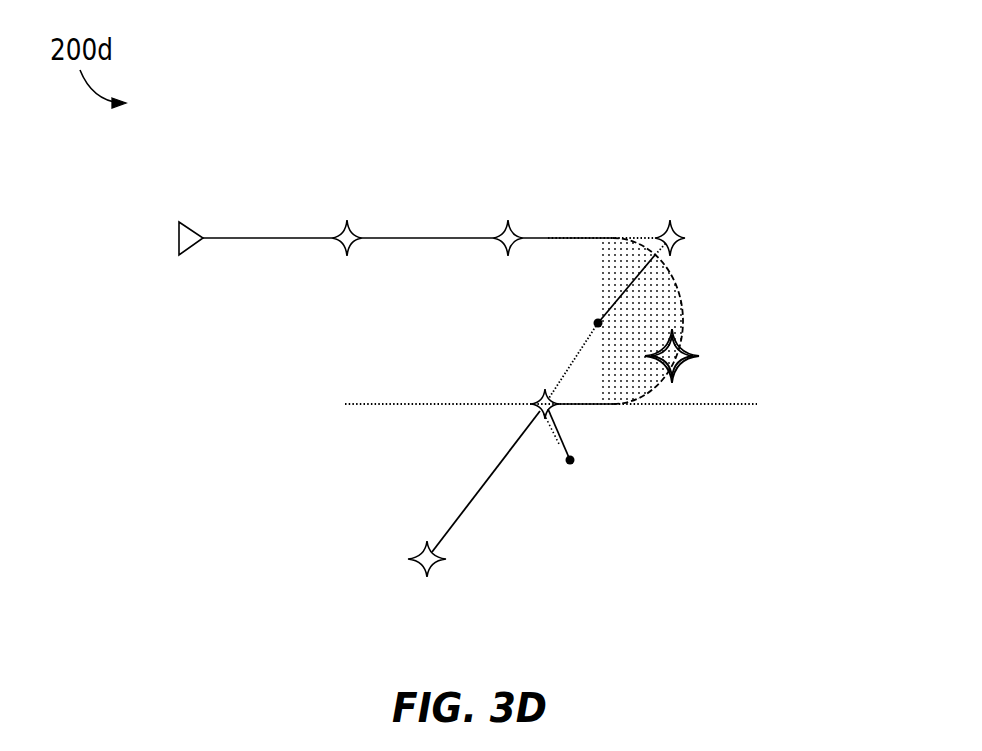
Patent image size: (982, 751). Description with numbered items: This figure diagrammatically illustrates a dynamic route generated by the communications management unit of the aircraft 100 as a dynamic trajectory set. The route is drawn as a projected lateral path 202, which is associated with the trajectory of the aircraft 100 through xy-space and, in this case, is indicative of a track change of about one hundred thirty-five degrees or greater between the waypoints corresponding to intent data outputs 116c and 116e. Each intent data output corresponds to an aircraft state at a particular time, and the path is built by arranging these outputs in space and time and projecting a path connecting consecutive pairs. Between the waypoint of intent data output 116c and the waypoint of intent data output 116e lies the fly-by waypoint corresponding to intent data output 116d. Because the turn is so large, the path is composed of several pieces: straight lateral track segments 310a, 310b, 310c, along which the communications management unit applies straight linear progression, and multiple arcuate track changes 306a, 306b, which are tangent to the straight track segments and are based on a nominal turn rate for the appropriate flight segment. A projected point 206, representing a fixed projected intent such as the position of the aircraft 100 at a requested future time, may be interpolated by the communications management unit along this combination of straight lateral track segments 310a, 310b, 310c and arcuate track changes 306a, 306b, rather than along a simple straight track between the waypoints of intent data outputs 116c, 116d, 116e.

The aircraft 100 is at (192, 245).
The projected lateral path 202 is at (278, 238).
The intent data output 116c is at (503, 222).
The intent data output 116d is at (673, 212).
The intent data output 116e is at (542, 393).
The projected point 206 is at (675, 380).
The straight lateral track segment 310a is at (548, 238).
The straight lateral track segment 310b is at (585, 405).
The straight lateral track segment 310c is at (478, 488).
The arcuate track change 306a is at (678, 298).
The arcuate track change 306b is at (535, 415).